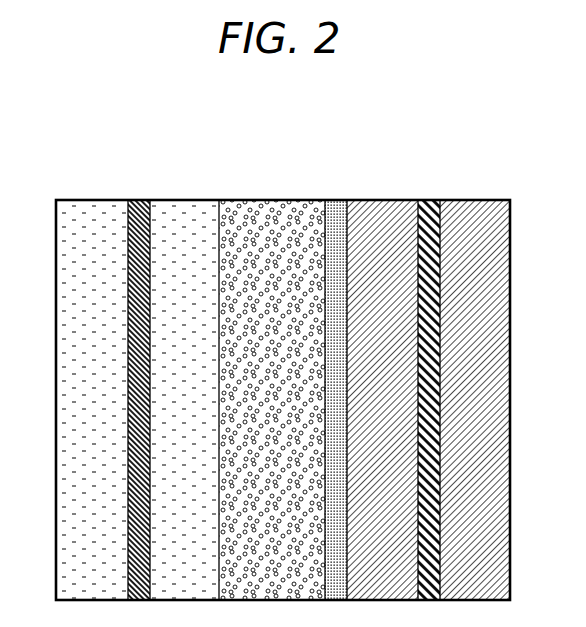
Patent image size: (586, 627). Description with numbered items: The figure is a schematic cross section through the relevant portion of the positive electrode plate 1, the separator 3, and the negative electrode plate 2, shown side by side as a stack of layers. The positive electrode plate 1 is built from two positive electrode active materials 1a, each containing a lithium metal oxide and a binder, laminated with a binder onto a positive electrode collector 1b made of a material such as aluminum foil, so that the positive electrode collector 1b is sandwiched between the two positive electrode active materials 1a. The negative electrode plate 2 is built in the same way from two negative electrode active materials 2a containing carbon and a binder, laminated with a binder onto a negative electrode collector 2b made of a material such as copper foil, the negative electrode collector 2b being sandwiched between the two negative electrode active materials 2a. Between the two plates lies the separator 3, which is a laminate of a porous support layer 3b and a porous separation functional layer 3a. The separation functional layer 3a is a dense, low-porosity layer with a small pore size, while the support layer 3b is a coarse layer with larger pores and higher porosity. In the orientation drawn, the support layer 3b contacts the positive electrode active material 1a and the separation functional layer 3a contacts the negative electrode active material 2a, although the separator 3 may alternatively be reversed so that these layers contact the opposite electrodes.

The positive electrode plate 1 is at (137, 347).
The positive electrode active material 1a is at (97, 282).
The positive electrode collector 1b is at (133, 272).
The separator 3 is at (283, 347).
The support layer 3b is at (250, 230).
The separation functional layer 3a is at (326, 373).
The negative electrode plate 2 is at (428, 347).
The negative electrode active material 2a is at (387, 275).
The negative electrode collector 2b is at (424, 268).